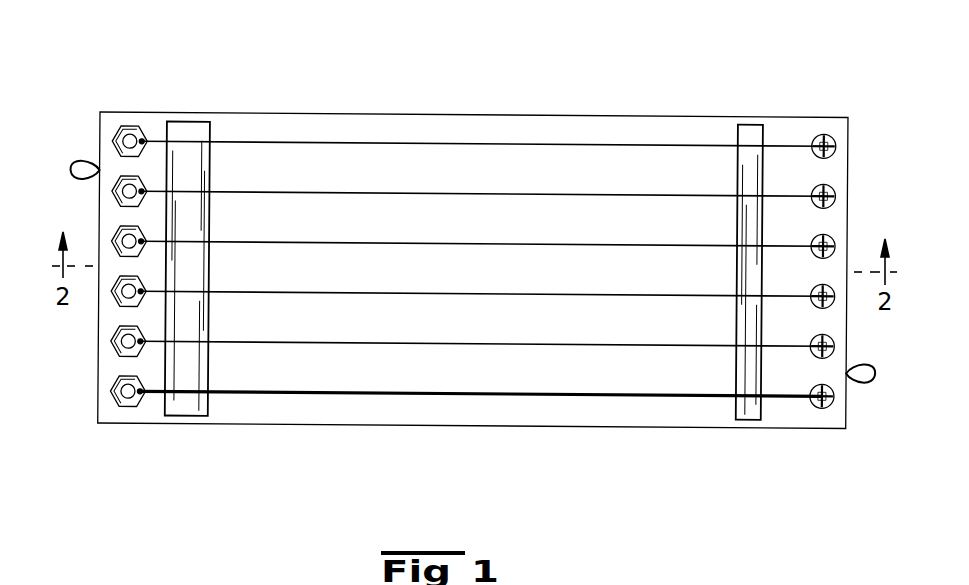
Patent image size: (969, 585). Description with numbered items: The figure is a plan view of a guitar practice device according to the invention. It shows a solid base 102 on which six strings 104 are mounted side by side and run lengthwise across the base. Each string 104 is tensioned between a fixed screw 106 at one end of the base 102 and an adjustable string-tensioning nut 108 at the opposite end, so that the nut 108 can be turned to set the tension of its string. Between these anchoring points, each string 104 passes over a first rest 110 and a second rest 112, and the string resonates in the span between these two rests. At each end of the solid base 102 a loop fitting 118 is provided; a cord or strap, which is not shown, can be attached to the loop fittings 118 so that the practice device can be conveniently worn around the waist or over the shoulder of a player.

The base 102 is at (473, 242).
The strings 104 is at (482, 275).
The fixed screw 106 is at (823, 232).
The adjustable string-tensioning nut 108 is at (131, 231).
The first rest 110 is at (752, 238).
The second rest 112 is at (187, 236).
The loop fitting 118 is at (478, 272).